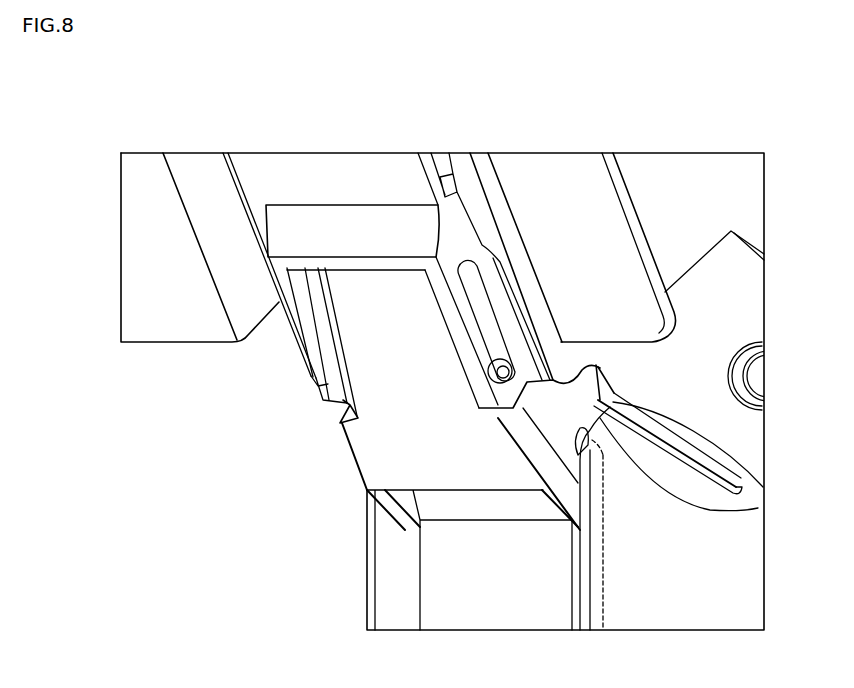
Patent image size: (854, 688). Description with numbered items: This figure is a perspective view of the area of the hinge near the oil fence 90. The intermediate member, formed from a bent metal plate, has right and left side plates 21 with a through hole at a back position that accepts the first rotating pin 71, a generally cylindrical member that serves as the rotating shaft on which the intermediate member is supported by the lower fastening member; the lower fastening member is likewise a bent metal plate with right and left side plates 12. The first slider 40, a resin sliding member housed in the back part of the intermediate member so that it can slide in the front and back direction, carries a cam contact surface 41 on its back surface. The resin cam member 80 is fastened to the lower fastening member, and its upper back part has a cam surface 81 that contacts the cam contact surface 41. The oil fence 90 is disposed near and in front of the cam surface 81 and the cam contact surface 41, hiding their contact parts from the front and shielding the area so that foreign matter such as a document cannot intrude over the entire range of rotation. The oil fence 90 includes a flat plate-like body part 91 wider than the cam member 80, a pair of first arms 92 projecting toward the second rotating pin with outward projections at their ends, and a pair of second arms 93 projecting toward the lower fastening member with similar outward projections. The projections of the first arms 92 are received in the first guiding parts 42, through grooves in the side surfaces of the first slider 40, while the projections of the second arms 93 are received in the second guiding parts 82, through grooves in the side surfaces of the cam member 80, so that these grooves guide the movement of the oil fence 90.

The side plate 12 is at (764, 560).
The side plate 21 is at (764, 290).
The first slider 40 is at (301, 390).
The cam contact surface 41 is at (556, 392).
The first guiding part 42 is at (480, 311).
The first rotating pin 71 is at (760, 382).
The cam member 80 is at (417, 633).
The cam surface 81 is at (758, 508).
The second guiding part 82 is at (603, 630).
The oil fence 90 is at (430, 481).
The body part 91 is at (360, 462).
The first arm 92 is at (340, 402).
The second arm 93 is at (547, 497).